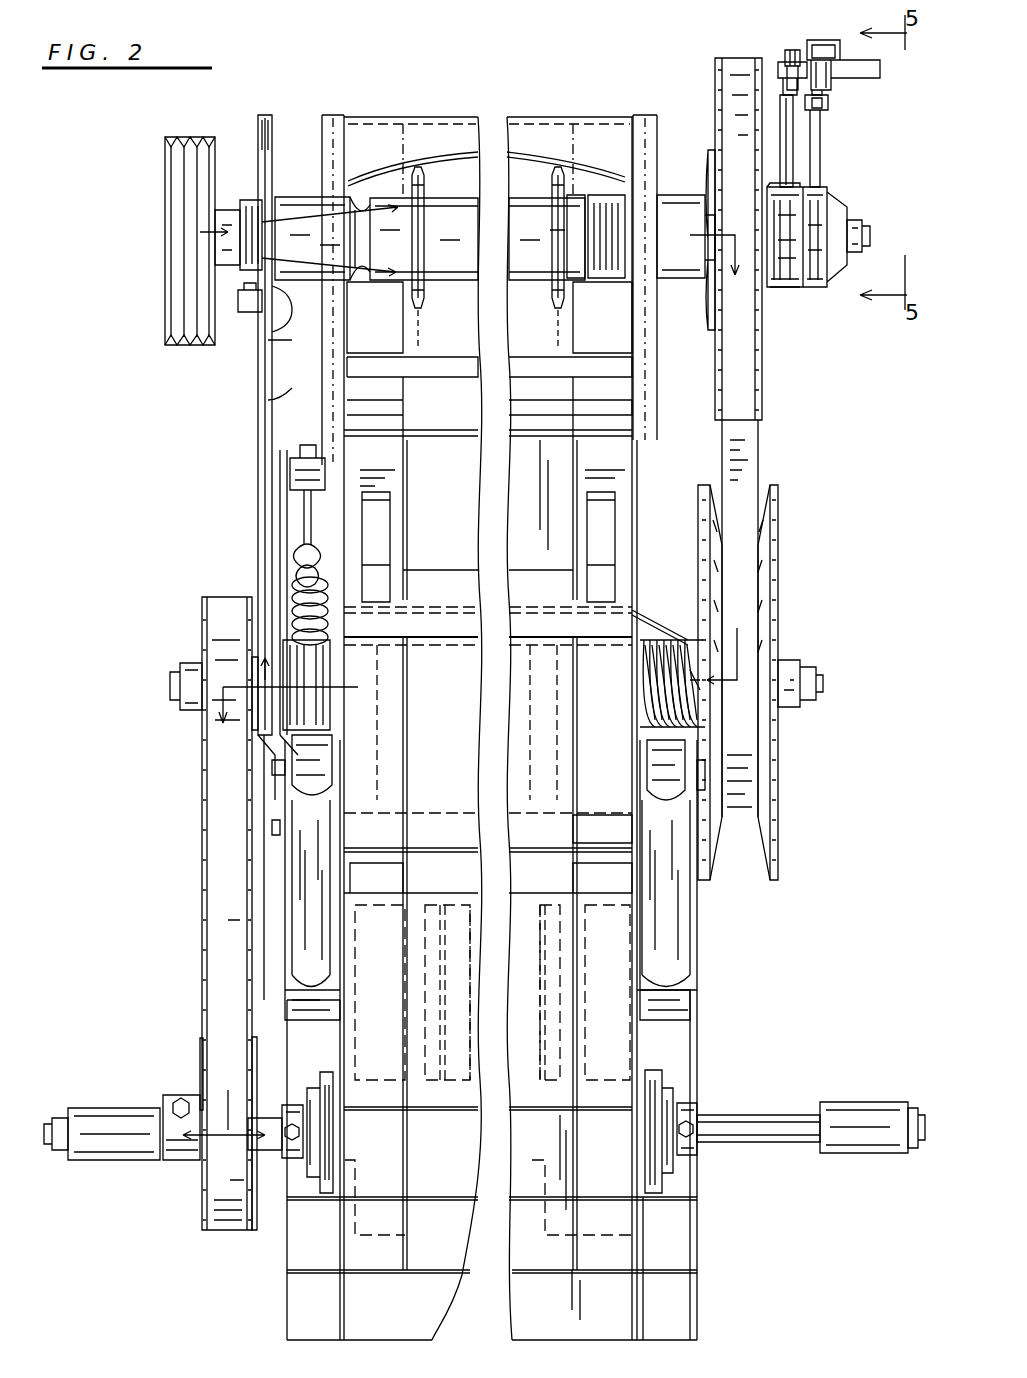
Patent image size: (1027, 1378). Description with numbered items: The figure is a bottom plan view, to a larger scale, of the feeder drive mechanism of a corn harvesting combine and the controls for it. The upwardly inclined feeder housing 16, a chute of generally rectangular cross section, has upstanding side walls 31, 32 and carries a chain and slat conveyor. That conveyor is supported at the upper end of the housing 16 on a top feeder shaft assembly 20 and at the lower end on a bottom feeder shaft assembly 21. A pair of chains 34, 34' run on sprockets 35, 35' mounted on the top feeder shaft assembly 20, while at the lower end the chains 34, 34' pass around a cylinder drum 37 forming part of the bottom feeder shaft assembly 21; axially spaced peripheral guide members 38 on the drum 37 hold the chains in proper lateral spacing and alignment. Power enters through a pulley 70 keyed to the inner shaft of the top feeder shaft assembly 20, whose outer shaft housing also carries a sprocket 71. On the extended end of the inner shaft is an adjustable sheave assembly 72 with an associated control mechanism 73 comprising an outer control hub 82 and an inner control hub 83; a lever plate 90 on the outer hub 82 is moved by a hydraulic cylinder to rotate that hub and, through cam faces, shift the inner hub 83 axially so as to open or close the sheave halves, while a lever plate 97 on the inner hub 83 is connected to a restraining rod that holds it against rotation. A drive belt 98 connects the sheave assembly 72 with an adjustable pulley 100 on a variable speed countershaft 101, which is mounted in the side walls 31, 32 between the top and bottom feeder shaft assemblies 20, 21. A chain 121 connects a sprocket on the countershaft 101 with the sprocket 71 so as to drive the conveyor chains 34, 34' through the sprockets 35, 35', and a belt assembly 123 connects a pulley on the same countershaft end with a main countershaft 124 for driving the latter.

The feeder housing 16 is at (401, 108).
The top feeder shaft assembly 20 is at (676, 198).
The bottom feeder shaft assembly 21 is at (392, 1104).
The side wall 31 is at (347, 783).
The side wall 32 is at (640, 748).
The chain 34 is at (441, 330).
The chain 34' is at (530, 330).
The sprocket 35 is at (438, 237).
The sprocket 35' is at (537, 237).
The cylinder drum 37 is at (650, 950).
The peripheral guide member 38 is at (448, 1090).
The pulley 70 is at (180, 136).
The sprocket 71 is at (270, 152).
The adjustable sheave assembly 72 is at (714, 78).
The control mechanism 73 is at (830, 291).
The outer control hub 82 is at (825, 190).
The inner control hub 83 is at (796, 288).
The lever plate 90 is at (822, 146).
The lever plate 97 is at (786, 128).
The drive belt 98 is at (756, 476).
The adjustable pulley 100 is at (792, 786).
The variable speed countershaft 101 is at (822, 676).
The chain 121 is at (262, 518).
The belt assembly 123 is at (206, 902).
The main countershaft 124 is at (756, 1118).